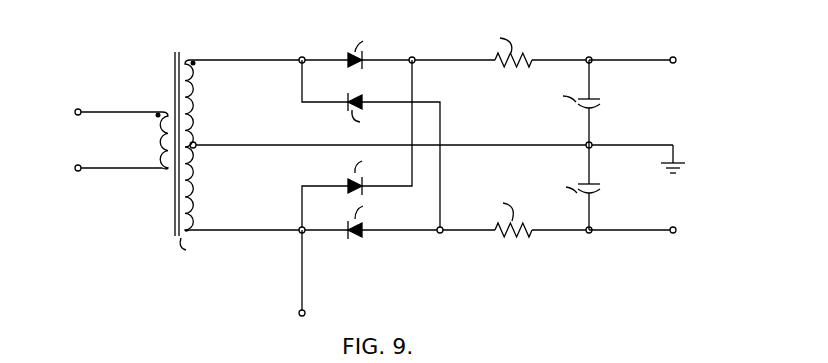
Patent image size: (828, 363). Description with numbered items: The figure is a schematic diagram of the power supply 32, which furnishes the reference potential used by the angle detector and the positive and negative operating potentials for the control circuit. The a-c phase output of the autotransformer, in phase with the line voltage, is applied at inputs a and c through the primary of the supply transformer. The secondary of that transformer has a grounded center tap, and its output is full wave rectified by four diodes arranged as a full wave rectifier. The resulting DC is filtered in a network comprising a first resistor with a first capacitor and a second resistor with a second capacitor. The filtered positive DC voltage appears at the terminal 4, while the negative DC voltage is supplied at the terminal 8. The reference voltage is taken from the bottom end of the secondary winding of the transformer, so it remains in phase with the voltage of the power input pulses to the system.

The power supply 32 is at (108, 229).
The terminal 4 is at (650, 58).
The terminal 8 is at (648, 241).